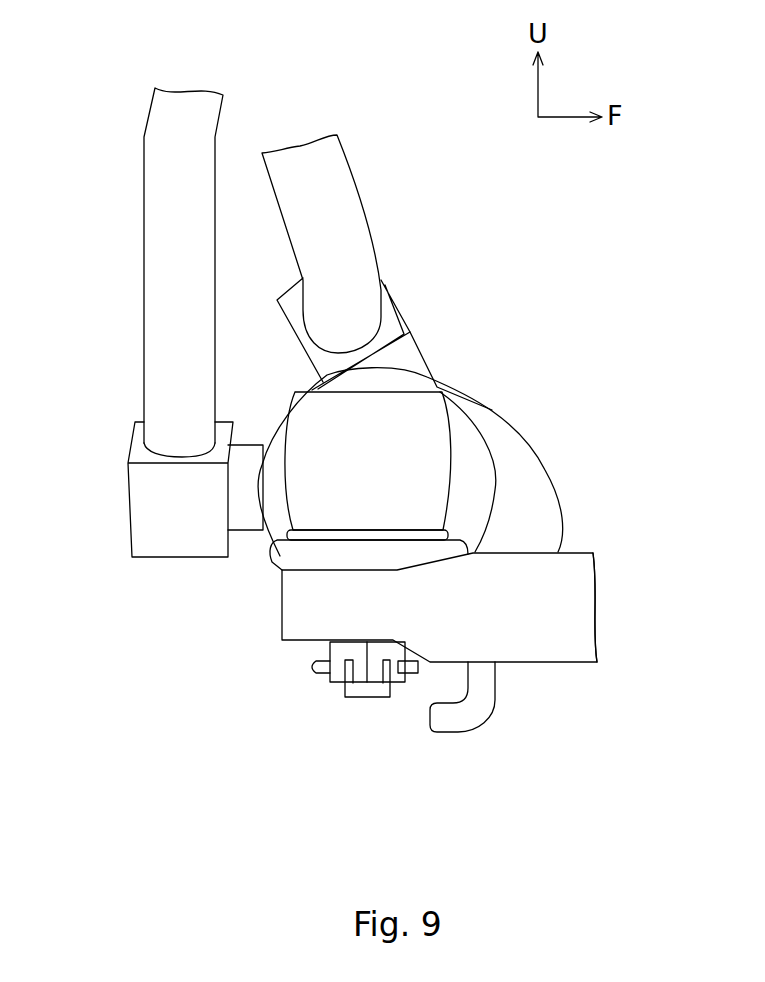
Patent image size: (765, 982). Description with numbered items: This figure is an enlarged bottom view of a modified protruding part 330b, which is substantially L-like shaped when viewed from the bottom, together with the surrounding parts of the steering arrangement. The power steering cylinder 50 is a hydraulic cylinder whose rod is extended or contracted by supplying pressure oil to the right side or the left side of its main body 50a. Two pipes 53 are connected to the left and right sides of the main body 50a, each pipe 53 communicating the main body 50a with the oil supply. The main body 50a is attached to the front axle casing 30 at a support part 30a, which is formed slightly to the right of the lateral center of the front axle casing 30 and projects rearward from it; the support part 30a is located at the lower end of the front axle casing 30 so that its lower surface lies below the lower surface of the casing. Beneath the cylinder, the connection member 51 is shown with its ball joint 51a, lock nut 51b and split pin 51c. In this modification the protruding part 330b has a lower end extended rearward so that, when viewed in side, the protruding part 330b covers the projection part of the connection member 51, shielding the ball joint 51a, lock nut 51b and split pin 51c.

The front axle casing 30 is at (546, 545).
The support part 30a is at (570, 645).
The protruding part 330b is at (450, 720).
The power steering cylinder 50 is at (530, 426).
The main body 50a is at (520, 455).
The connection member 51 is at (294, 544).
The ball joint 51a is at (310, 490).
The lock nut 51b is at (327, 655).
The split pin 51c is at (312, 667).
The pipes 53 is at (335, 182).